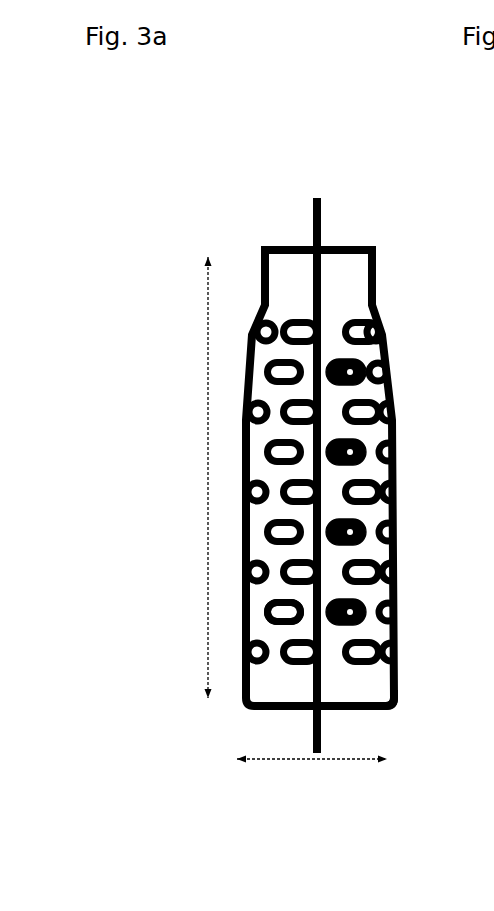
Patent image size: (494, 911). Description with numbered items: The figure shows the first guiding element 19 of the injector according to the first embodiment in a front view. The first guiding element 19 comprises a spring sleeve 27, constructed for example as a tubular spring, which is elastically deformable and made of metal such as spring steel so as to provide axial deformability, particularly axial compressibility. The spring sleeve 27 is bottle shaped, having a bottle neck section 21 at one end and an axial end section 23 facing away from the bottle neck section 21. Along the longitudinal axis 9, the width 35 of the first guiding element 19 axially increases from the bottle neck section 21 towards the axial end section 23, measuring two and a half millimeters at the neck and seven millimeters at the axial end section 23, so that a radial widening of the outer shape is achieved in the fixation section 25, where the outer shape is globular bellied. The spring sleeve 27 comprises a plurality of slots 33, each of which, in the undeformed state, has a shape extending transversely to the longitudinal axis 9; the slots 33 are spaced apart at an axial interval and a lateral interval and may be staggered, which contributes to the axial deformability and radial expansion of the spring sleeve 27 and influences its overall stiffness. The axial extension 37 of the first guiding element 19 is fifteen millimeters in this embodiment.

The first guiding element 19 is at (120, 250).
The bottle neck section 21 is at (258, 235).
The spring sleeve 27 is at (360, 263).
The longitudinal axis 9 is at (320, 209).
The fixation section 25 is at (183, 540).
The slots 33 is at (290, 612).
The axial extension 37 is at (207, 488).
The width 35 is at (343, 760).
The axial end section 23 is at (233, 720).